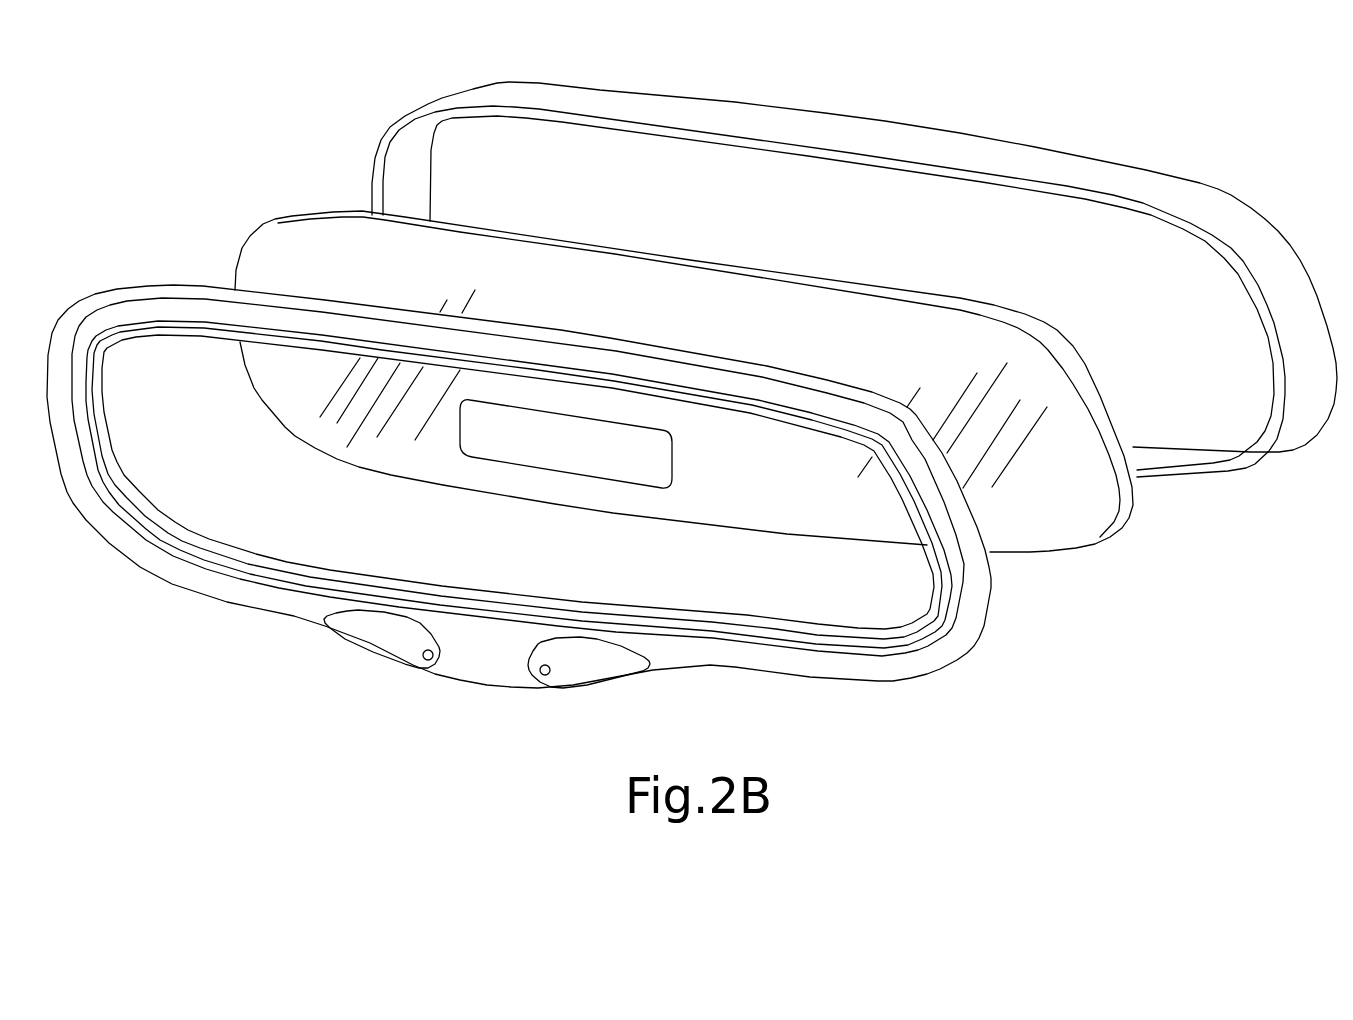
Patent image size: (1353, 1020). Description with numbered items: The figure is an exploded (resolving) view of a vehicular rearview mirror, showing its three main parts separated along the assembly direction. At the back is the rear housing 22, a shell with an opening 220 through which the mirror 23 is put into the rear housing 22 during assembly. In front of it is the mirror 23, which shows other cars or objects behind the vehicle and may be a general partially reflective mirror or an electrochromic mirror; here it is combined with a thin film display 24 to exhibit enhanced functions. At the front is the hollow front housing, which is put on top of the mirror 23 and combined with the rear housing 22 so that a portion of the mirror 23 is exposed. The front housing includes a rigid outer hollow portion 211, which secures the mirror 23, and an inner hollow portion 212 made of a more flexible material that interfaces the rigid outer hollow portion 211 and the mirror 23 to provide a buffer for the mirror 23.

The rear housing 22 is at (1060, 177).
The opening 220 is at (1160, 293).
The mirror 23 is at (1013, 530).
The thin film display 24 is at (527, 440).
The outer hollow portion 211 is at (905, 663).
The inner hollow portion 212 is at (800, 640).